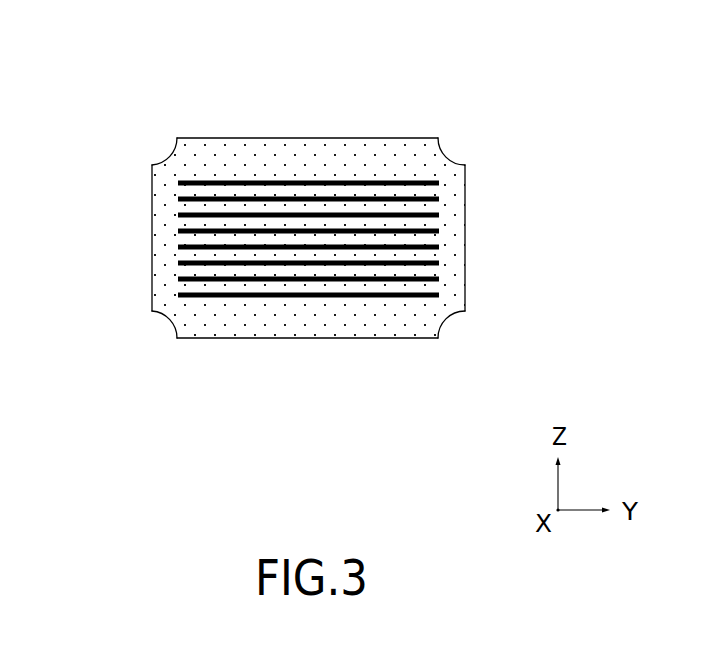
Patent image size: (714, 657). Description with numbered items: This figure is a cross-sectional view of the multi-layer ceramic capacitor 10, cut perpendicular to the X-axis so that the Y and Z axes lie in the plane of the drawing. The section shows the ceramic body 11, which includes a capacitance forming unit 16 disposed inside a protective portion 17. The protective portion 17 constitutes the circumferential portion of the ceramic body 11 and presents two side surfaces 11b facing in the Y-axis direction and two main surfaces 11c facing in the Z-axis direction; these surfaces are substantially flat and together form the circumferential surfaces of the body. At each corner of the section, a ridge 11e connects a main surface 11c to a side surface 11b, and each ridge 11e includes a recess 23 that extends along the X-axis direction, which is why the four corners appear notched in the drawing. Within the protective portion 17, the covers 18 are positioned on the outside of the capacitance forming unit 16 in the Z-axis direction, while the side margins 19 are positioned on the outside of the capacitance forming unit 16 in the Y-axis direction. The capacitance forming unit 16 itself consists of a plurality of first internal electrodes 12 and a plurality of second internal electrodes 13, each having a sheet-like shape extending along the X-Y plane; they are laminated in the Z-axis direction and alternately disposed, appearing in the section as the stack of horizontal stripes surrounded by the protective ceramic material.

The multi-layer ceramic capacitor 10 is at (176, 57).
The ceramic body 11 is at (328, 86).
The side surface 11b is at (152, 185).
The main surface 11c is at (218, 138).
The ridge 11e is at (150, 132).
The recess 23 is at (308, 238).
The first internal electrode 12 is at (267, 198).
The second internal electrode 13 is at (390, 198).
The capacitance forming unit 16 is at (333, 235).
The protective portion 17 is at (78, 212).
The cover 18 is at (203, 317).
The side margin 19 is at (167, 237).